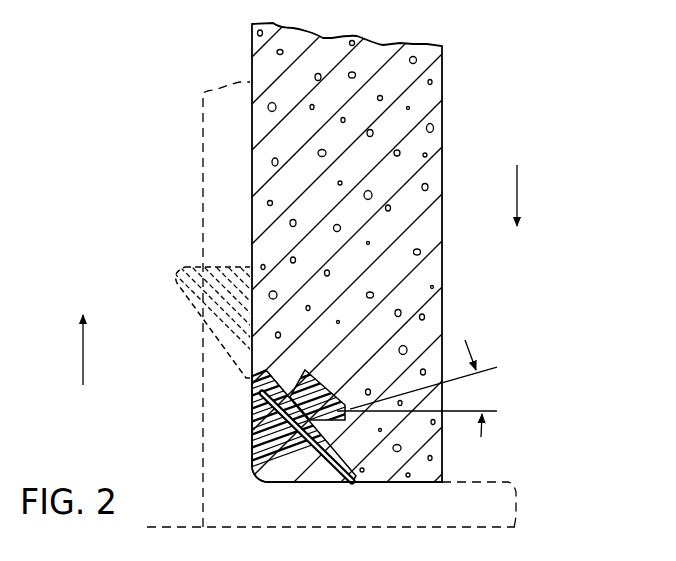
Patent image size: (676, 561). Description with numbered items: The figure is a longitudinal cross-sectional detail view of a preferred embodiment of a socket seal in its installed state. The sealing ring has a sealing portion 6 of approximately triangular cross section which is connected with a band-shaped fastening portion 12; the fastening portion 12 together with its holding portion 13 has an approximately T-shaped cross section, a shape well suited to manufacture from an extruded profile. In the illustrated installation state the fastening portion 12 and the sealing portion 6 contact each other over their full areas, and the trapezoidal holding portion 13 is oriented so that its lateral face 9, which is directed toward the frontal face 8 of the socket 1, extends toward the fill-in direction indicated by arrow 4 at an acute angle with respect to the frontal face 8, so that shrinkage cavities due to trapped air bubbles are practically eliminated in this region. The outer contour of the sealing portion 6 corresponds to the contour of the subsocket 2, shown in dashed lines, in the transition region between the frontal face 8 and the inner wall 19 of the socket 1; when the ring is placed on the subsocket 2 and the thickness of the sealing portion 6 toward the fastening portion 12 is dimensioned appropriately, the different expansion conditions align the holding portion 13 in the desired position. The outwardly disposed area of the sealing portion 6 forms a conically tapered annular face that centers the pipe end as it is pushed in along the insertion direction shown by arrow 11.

The socket 1 is at (430, 278).
The subsocket 2 is at (487, 497).
The fill-in direction 4 is at (517, 178).
The sealing portion 6 is at (262, 461).
The frontal face 8 is at (365, 483).
The lateral face 9 is at (340, 415).
The insertion direction 11 is at (83, 362).
The fastening portion 12 is at (275, 368).
The holding portion 13 is at (330, 392).
The inner wall 19 is at (250, 219).